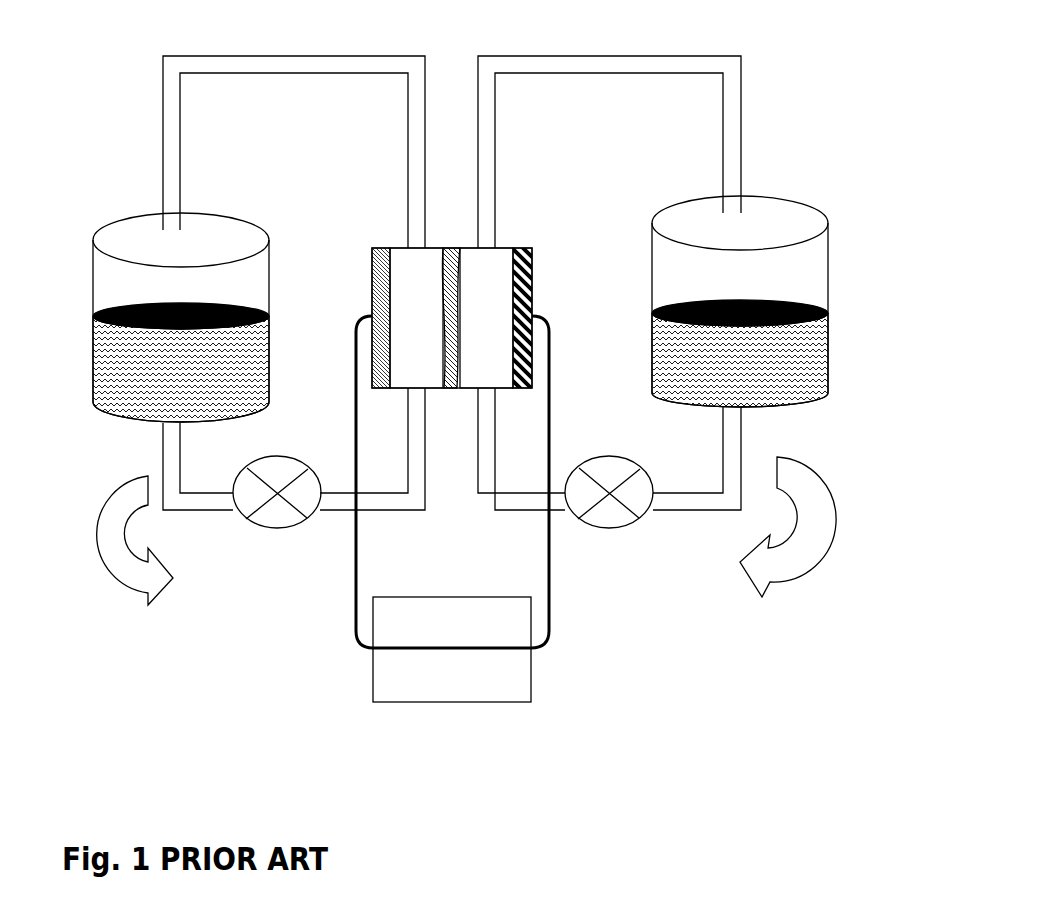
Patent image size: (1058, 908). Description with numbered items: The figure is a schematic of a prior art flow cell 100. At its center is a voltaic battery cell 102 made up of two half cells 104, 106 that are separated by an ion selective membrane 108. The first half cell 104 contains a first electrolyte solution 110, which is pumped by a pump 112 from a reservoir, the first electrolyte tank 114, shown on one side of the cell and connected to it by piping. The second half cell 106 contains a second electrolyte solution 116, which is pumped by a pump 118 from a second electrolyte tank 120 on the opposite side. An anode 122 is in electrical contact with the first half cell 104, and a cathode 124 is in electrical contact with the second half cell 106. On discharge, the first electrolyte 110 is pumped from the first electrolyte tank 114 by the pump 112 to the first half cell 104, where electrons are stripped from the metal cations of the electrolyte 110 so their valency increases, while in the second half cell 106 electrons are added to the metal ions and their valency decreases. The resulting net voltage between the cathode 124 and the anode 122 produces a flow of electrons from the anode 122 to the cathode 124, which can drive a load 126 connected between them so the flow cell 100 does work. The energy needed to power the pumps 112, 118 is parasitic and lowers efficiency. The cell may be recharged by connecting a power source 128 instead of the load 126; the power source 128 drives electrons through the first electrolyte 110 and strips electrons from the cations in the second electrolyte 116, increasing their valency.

The flow cell 100 is at (797, 125).
The voltaic battery cell 102 is at (553, 320).
The first half cell 104 is at (427, 293).
The second half cell 106 is at (483, 301).
The ion selective membrane 108 is at (456, 248).
The first electrolyte solution 110 is at (133, 370).
The pump 112 is at (287, 528).
The first electrolyte tank 114 is at (93, 270).
The second electrolyte solution 116 is at (828, 337).
The pump 118 is at (605, 516).
The second electrolyte tank 120 is at (805, 267).
The anode 122 is at (386, 248).
The cathode 124 is at (512, 248).
The load 126 is at (428, 597).
The power source 128 is at (473, 702).